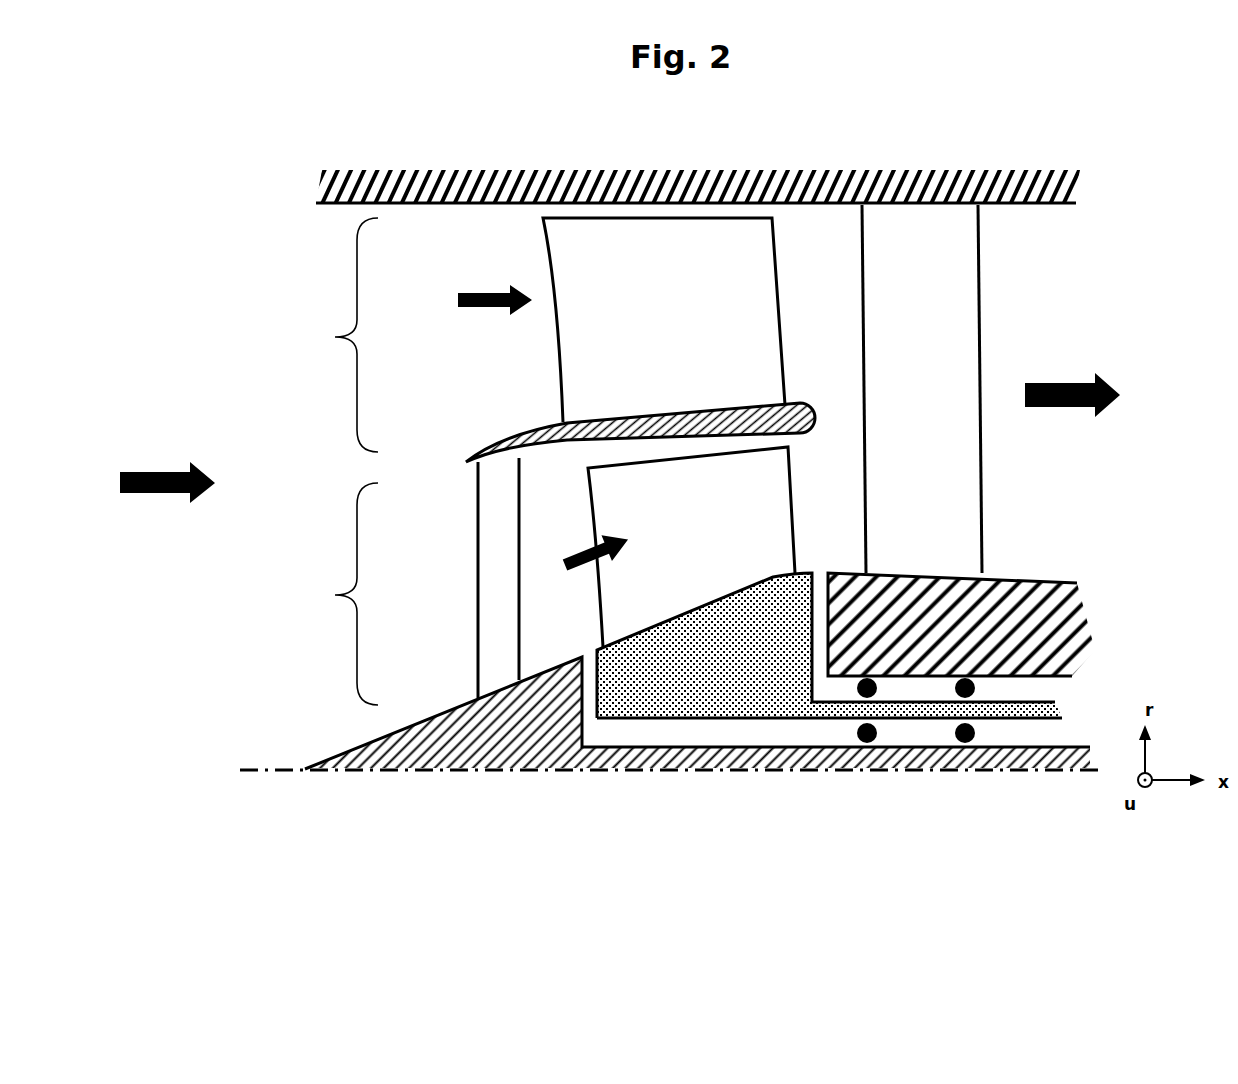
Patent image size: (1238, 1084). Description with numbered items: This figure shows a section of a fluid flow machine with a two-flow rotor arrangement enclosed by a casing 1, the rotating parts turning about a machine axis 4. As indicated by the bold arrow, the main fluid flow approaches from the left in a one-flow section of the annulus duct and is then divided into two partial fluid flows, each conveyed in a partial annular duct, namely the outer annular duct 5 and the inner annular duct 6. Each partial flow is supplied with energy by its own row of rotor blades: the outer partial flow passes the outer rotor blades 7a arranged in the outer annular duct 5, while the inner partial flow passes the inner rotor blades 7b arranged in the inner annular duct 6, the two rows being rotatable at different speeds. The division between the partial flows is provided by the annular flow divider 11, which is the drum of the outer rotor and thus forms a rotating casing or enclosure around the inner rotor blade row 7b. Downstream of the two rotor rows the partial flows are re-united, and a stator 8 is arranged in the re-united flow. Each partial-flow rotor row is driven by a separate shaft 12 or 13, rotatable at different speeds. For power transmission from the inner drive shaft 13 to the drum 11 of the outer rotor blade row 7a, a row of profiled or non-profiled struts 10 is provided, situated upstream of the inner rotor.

The casing 1 is at (363, 178).
The machine axis 4 is at (255, 778).
The outer annular duct 5 is at (328, 335).
The inner annular duct 6 is at (328, 594).
The outer rotor blades 7a is at (735, 242).
The inner rotor blades 7b is at (757, 498).
The stator vanes 8 is at (913, 278).
The struts 10 is at (502, 609).
The annular flow divider 11 is at (790, 403).
The shaft 12 is at (1027, 717).
The inner drive shaft 13 is at (1090, 780).